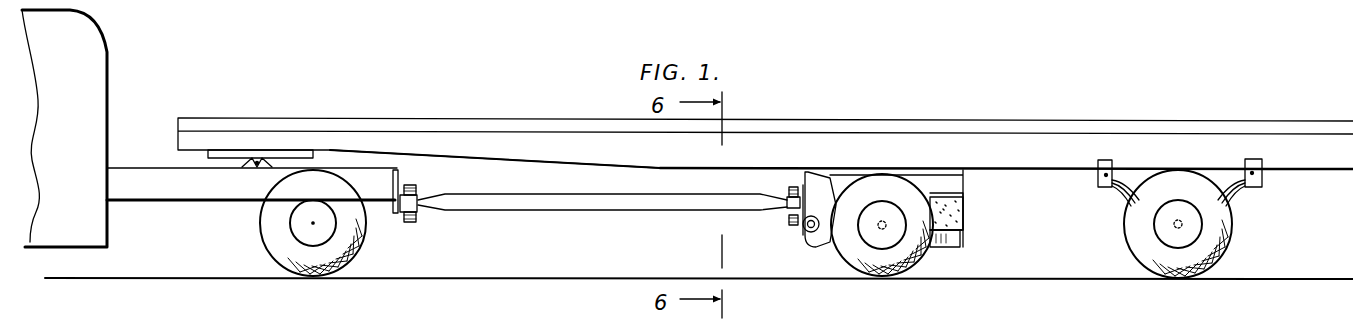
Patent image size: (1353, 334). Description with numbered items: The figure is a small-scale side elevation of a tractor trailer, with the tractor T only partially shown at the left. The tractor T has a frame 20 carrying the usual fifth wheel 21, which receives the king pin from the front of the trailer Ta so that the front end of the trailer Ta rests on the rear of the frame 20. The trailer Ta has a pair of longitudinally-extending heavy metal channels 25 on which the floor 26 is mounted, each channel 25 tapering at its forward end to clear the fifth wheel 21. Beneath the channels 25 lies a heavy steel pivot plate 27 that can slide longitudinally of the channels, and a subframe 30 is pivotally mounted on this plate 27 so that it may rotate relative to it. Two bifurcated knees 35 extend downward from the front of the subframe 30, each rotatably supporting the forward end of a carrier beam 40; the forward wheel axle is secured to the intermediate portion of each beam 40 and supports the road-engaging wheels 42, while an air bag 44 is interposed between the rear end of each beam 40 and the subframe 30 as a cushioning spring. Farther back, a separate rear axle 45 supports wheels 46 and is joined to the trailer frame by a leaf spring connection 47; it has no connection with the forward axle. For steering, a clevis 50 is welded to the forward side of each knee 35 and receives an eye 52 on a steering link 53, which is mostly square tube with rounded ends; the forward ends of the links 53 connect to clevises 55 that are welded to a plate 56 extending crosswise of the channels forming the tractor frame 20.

The tractor T is at (110, 50).
The trailer Ta is at (512, 117).
The frame 20 is at (127, 170).
The fifth wheel 21 is at (232, 157).
The floor 26 is at (868, 122).
The channel 25 is at (1075, 163).
The pivot plate 27 is at (935, 170).
The subframe 30 is at (966, 186).
The bifurcated knee 35 is at (812, 196).
The carrier beam 40 is at (822, 248).
The wheel 42 is at (908, 275).
The air bag 44 is at (965, 222).
The rear axle 45 is at (1185, 230).
The wheel 46 is at (1153, 258).
The leaf spring connection 47 is at (1232, 197).
The clevis 50 is at (795, 235).
The eye 52 is at (790, 206).
The steering link 53 is at (603, 208).
The clevis 55 is at (410, 198).
The plate 56 is at (400, 175).